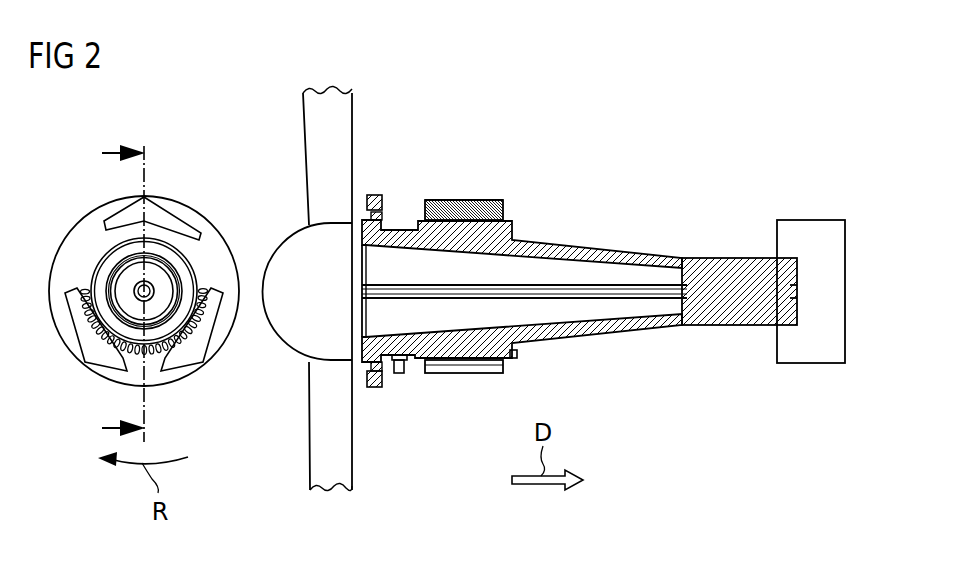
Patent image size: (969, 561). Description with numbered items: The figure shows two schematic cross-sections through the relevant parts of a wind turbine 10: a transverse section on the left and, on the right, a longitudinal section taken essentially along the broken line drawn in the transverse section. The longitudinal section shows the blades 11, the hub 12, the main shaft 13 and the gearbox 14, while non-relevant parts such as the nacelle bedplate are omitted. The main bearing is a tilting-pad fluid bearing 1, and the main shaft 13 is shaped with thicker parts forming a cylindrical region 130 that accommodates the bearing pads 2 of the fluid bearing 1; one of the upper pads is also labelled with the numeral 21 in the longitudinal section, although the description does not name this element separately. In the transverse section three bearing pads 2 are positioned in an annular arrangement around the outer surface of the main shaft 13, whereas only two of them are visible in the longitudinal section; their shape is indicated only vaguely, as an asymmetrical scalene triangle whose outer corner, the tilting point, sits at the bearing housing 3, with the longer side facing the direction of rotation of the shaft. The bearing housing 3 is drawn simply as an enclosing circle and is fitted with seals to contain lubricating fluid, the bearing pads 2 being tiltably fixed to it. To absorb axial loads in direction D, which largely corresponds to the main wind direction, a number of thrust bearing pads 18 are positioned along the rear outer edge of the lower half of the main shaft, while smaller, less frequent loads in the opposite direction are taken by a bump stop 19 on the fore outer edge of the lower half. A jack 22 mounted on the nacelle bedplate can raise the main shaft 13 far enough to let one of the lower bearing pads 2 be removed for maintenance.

The tilting-pad fluid bearing 1 is at (198, 200).
The bearing pads 2 is at (158, 214).
The bearing housing 3 is at (83, 218).
The wind turbine 10 is at (635, 200).
The blades 11 is at (321, 120).
The hub 12 is at (285, 330).
The main shaft 13 is at (197, 255).
The gearbox 14 is at (809, 232).
The thrust bearing pads 18 is at (77, 290).
The bump stop 19 is at (407, 358).
The contact surface 21 is at (453, 198).
The jack 22 is at (396, 376).
The cylindrical region 130 is at (488, 350).